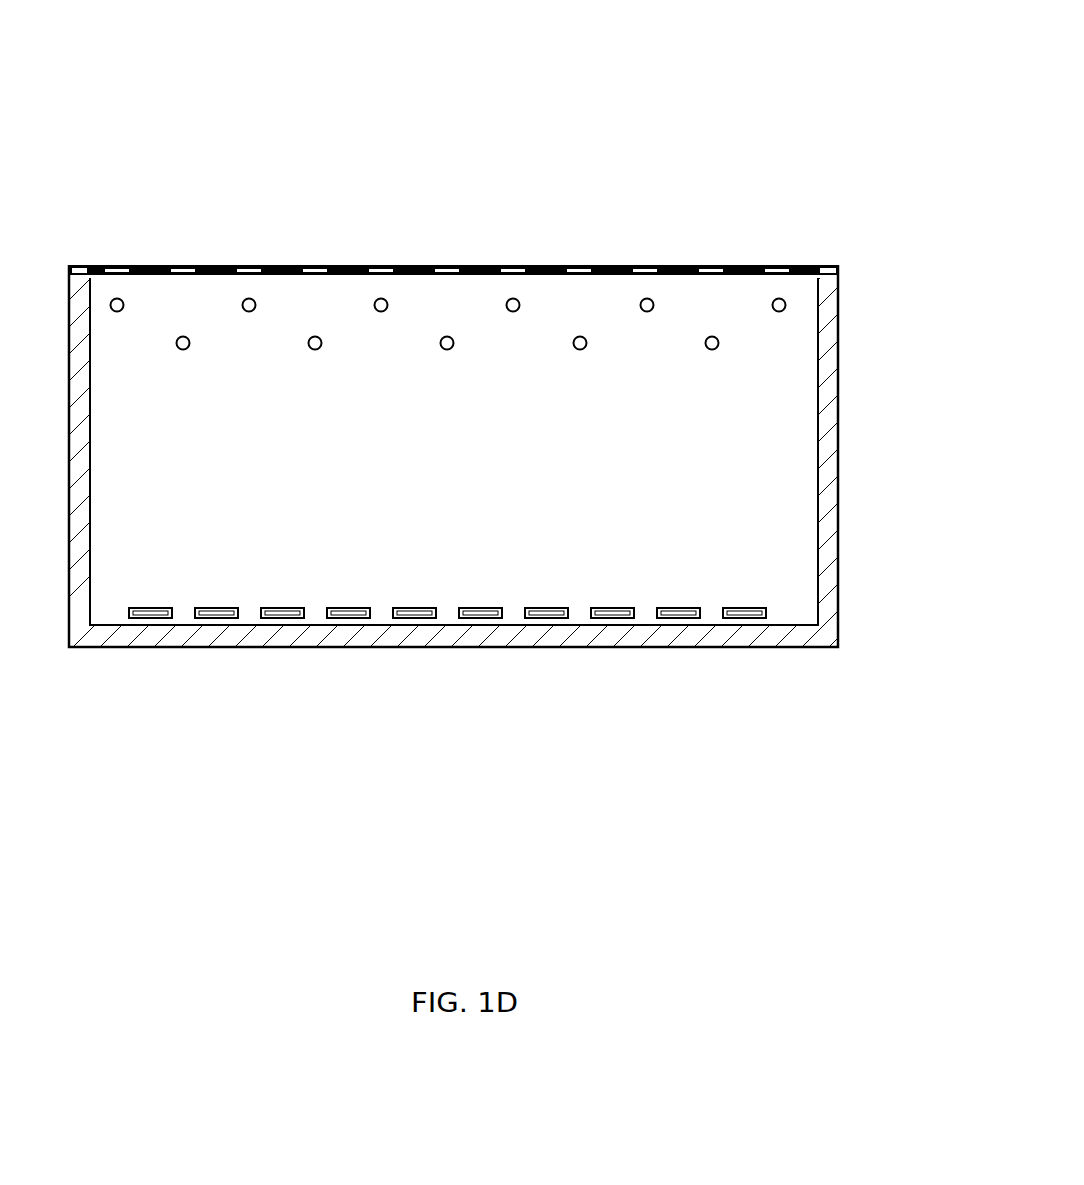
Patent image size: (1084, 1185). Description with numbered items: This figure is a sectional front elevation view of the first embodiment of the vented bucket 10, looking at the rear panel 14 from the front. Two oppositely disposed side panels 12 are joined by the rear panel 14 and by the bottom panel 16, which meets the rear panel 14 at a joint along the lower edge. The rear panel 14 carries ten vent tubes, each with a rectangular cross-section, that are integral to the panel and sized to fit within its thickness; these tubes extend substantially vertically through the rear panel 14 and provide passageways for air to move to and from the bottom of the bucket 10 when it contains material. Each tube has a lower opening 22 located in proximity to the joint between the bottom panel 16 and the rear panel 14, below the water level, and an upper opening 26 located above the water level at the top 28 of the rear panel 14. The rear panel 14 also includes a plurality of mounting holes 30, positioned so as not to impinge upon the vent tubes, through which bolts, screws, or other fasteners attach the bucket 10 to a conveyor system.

The vented bucket 10 is at (668, 97).
The side panels 12 is at (68, 318).
The rear panel 14 is at (292, 314).
The bottom panel 16 is at (325, 647).
The lower opening 22 is at (480, 618).
The upper opening 26 is at (480, 265).
The top of the rear panel 28 is at (249, 265).
The mounting hole 30 is at (648, 298).